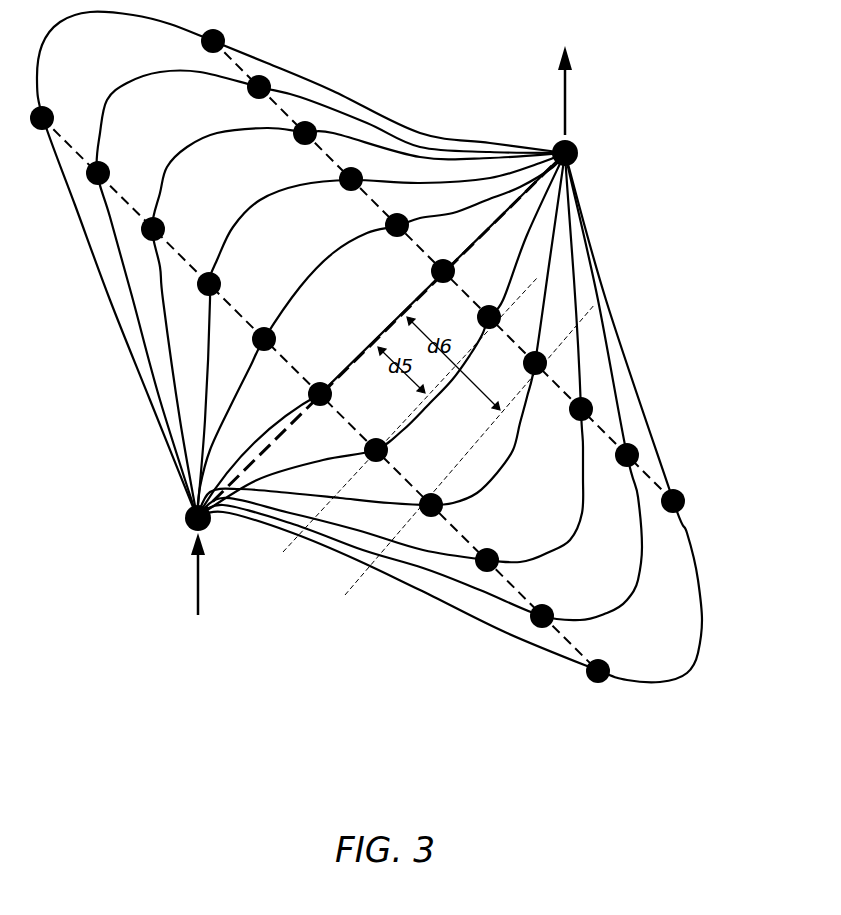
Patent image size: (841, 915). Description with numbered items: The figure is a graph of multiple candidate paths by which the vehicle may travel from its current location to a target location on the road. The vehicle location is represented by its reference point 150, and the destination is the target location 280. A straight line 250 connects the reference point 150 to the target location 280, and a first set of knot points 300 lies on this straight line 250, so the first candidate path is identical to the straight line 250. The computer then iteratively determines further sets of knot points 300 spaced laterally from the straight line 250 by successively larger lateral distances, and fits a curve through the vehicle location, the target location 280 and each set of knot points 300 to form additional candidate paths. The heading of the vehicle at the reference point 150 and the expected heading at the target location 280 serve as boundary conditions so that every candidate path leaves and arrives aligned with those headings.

The reference point 150 is at (188, 518).
The target location 280 is at (578, 151).
The straight line 250 is at (382, 334).
The knot points 300 is at (500, 319).